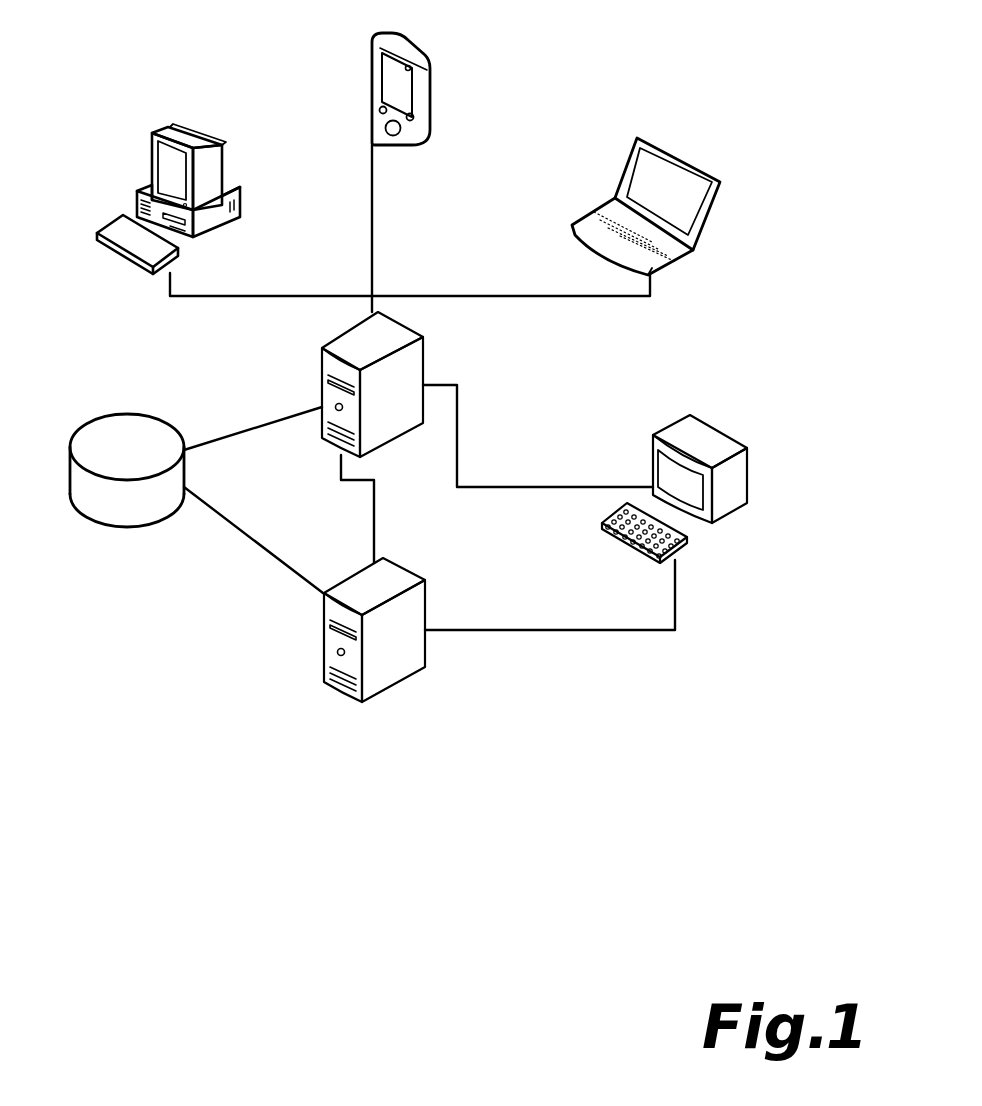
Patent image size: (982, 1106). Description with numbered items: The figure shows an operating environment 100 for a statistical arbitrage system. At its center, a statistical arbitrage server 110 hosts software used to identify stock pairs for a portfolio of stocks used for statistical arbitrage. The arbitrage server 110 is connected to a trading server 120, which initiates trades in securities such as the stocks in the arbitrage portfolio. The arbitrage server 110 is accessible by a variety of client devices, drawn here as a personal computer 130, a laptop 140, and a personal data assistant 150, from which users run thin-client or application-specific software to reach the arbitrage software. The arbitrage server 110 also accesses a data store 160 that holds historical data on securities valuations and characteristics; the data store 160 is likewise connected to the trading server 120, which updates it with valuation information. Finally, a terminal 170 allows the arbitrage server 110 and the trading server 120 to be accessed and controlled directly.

The operating environment 100 is at (858, 40).
The statistical arbitrage server 110 is at (360, 384).
The trading server 120 is at (394, 630).
The personal computer 130 is at (185, 199).
The laptop 140 is at (653, 206).
The personal data assistant 150 is at (413, 87).
The data store 160 is at (132, 462).
The terminal 170 is at (686, 489).